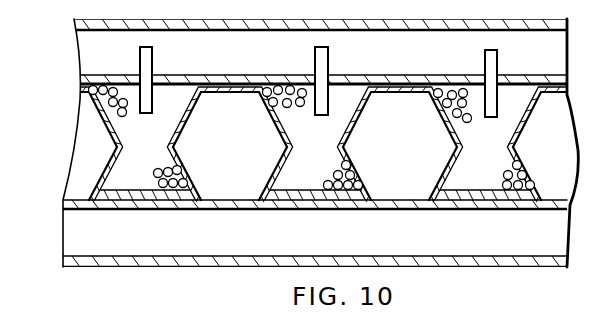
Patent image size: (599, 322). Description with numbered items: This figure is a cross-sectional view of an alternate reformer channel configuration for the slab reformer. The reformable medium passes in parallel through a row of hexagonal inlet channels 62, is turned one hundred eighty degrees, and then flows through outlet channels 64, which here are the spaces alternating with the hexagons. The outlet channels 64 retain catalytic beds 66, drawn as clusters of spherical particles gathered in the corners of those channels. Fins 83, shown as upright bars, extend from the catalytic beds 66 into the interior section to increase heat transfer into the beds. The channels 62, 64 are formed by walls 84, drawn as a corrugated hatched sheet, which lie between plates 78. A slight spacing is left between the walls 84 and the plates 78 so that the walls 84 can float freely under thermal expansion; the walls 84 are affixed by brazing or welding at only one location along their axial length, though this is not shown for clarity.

The inlet channels 62 is at (242, 157).
The outlet channels 64 is at (329, 157).
The catalytic beds 66 is at (158, 171).
The plates 78 is at (190, 76).
The fins 83 is at (324, 64).
The walls 84 is at (299, 144).